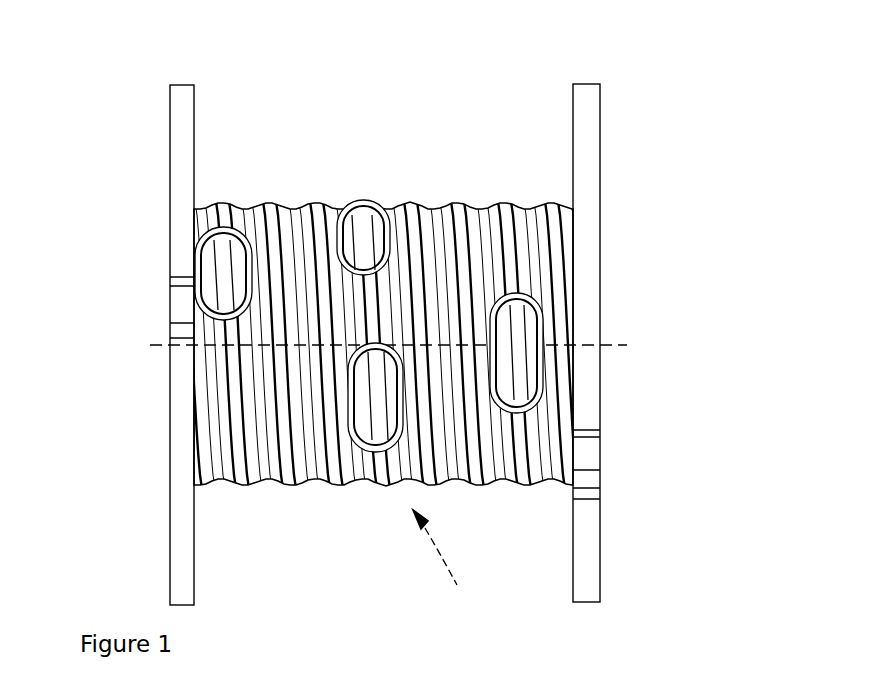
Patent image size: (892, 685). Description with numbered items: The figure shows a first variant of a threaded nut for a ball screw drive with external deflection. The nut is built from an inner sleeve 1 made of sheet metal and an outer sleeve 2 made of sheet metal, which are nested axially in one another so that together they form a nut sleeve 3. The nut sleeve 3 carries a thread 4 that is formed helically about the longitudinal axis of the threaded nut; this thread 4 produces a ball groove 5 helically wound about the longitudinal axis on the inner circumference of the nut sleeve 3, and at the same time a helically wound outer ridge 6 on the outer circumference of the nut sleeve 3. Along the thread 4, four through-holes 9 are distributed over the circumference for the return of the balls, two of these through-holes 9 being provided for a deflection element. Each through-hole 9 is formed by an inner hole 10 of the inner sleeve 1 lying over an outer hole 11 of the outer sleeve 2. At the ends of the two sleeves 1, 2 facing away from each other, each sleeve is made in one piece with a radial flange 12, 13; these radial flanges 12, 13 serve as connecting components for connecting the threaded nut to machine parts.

The inner sleeve 1 is at (378, 208).
The outer sleeve 2 is at (355, 208).
The nut sleeve 3 is at (445, 561).
The thread 4 is at (272, 232).
The ball groove 5 is at (218, 276).
The outer ridge 6 is at (506, 200).
The through-hole 9 is at (527, 357).
The inner hole 10 is at (503, 333).
The outer hole 11 is at (623, 293).
The radial flange 12 is at (693, 107).
The radial flange 13 is at (182, 117).